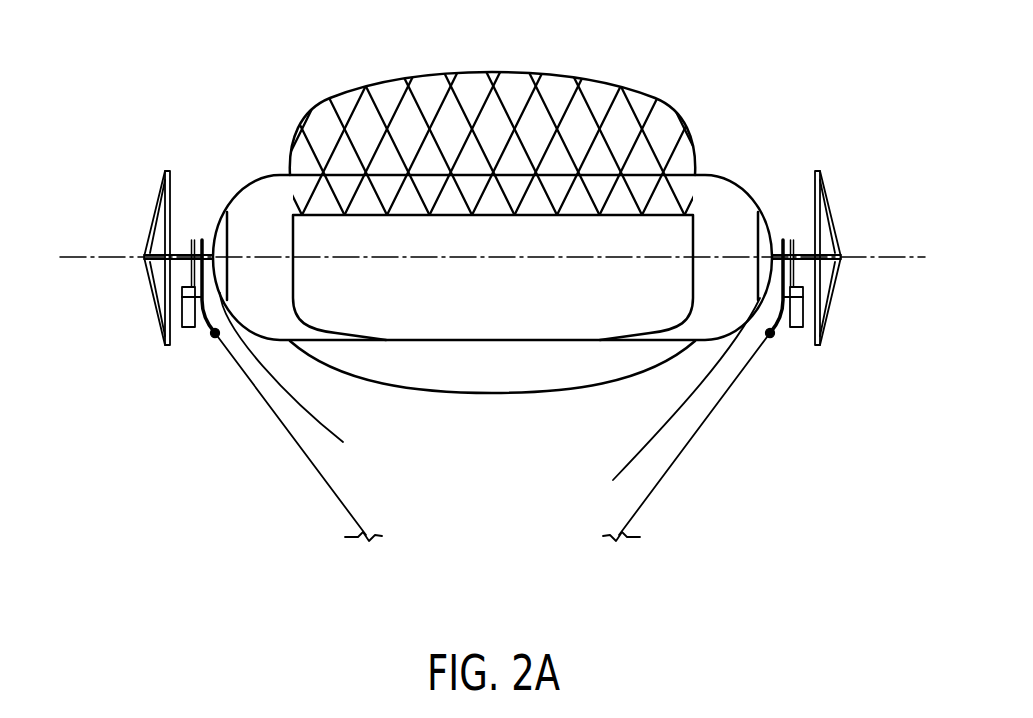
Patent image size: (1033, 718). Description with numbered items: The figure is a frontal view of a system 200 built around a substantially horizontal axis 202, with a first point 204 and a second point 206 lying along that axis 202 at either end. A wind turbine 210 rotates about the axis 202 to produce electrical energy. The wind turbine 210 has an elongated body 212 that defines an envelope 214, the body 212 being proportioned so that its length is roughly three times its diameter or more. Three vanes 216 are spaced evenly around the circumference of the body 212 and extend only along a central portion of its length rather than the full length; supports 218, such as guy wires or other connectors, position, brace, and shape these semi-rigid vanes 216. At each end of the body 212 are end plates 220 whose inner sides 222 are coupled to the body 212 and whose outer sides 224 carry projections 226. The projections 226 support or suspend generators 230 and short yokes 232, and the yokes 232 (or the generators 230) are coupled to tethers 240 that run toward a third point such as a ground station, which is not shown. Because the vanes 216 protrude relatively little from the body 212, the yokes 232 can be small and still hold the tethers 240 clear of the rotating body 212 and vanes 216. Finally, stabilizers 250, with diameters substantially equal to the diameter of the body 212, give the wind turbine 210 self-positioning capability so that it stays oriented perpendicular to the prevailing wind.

The system 200 is at (114, 44).
The substantially horizontal axis 202 is at (116, 252).
The first point 204 is at (226, 210).
The second point 206 is at (760, 212).
The wind turbine 210 is at (483, 427).
The body 212 is at (272, 342).
The envelope 214 is at (704, 309).
The vanes 216 is at (603, 86).
The supports 218 is at (397, 103).
The end plates 220 is at (211, 223).
The inner sides 222 is at (225, 237).
The outer sides 224 is at (490, 396).
The projections 226 is at (151, 240).
The generators 230 is at (187, 327).
The yokes 232 is at (214, 335).
The tethers 240 is at (290, 472).
The stabilizers 250 is at (163, 313).